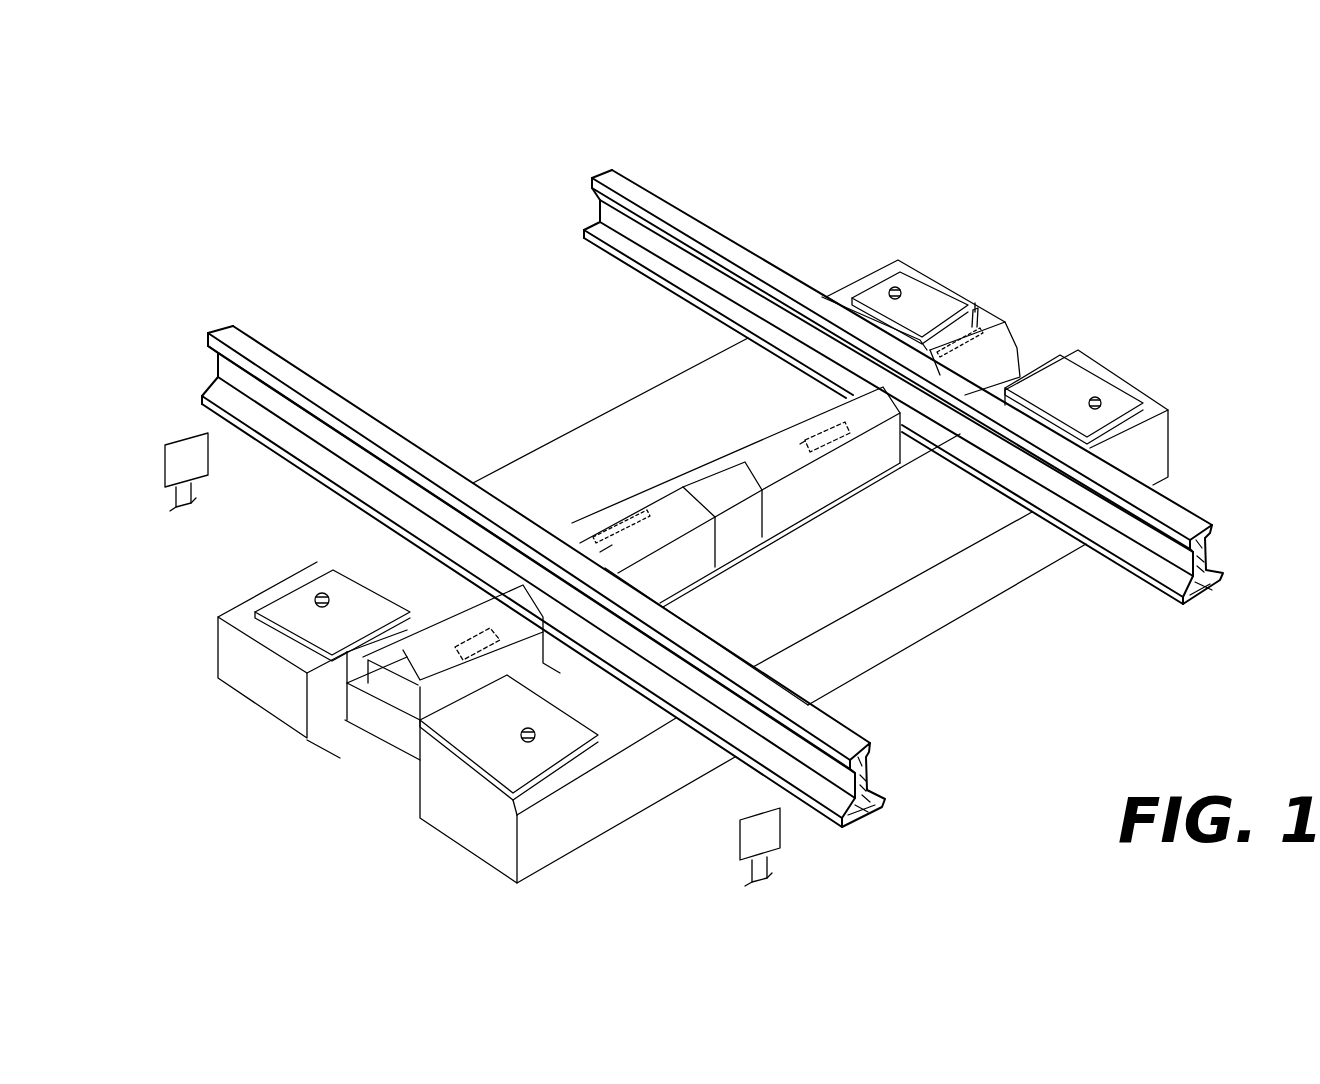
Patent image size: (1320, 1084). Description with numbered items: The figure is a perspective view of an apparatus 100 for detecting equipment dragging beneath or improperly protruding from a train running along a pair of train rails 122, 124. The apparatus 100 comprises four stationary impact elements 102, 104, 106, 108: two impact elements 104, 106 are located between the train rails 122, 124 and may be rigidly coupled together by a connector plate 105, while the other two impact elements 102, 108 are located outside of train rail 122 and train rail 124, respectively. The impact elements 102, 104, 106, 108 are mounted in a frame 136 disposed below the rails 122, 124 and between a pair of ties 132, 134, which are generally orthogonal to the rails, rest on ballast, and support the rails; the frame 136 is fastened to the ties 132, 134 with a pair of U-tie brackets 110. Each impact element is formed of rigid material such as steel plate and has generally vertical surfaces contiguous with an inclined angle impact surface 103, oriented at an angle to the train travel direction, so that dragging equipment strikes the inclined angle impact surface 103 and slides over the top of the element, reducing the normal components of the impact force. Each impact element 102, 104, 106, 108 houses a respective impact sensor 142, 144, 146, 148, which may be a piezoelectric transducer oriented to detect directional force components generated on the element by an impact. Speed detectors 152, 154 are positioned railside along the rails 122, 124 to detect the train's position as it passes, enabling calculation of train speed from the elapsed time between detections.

The apparatus 100 is at (762, 155).
The stationary impact element 102 is at (433, 640).
The inclined angle impact surface 103 is at (777, 462).
The stationary impact element 104 is at (660, 575).
The connector plate 105 is at (748, 520).
The stationary impact element 106 is at (830, 442).
The stationary impact element 108 is at (1000, 318).
The U-tie bracket 110 is at (285, 603).
The train rail 122 is at (866, 808).
The train rail 124 is at (1211, 592).
The tie 132 is at (548, 845).
The tie 134 is at (228, 658).
The frame 136 is at (358, 742).
The impact sensor 142 is at (460, 640).
The impact sensor 144 is at (615, 512).
The impact sensor 146 is at (862, 452).
The impact sensor 148 is at (975, 318).
The speed detector 152 is at (790, 848).
The speed detector 154 is at (178, 440).